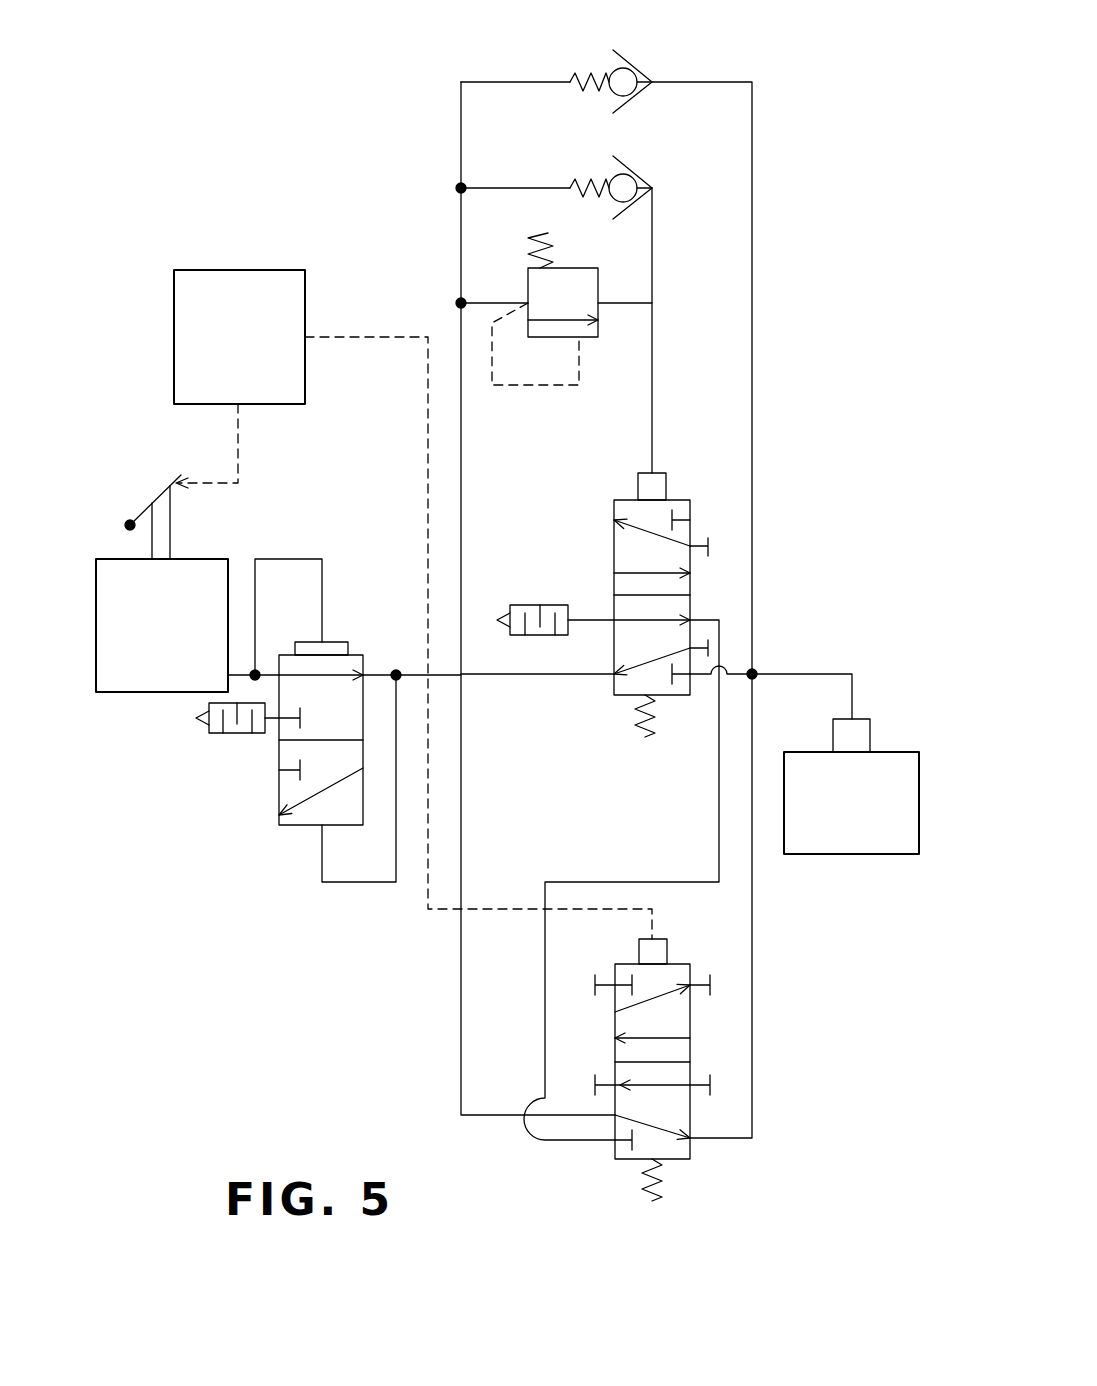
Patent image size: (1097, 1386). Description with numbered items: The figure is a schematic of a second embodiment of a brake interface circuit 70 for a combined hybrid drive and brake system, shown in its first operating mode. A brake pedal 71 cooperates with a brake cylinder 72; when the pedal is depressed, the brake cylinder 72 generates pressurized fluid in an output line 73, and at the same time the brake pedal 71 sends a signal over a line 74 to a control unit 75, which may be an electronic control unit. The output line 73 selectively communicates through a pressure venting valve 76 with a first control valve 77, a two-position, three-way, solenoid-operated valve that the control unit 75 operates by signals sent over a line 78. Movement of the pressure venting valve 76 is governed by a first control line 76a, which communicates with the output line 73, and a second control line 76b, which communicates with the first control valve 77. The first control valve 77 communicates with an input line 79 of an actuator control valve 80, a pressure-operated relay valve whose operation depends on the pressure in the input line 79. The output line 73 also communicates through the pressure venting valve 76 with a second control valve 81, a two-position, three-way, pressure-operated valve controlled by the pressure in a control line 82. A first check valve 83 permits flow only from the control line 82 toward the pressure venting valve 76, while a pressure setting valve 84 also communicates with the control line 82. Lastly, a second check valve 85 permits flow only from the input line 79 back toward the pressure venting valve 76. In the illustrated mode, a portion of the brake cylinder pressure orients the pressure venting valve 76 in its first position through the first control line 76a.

The brake interface circuit 70 is at (775, 277).
The brake pedal 71 is at (150, 490).
The brake cylinder 72 is at (142, 682).
The output line 73 is at (238, 673).
The line 74 is at (238, 430).
The control unit 75 is at (227, 270).
The pressure venting valve 76 is at (353, 653).
The first control line 76a is at (303, 559).
The second control line 76b is at (357, 882).
The first control valve 77 is at (675, 1160).
The line 78 is at (373, 337).
The input line 79 is at (793, 674).
The actuator control valve 80 is at (850, 854).
The second control valve 81 is at (629, 503).
The control line 82 is at (652, 253).
The first check valve 83 is at (637, 170).
The pressure setting valve 84 is at (585, 305).
The second check valve 85 is at (633, 63).